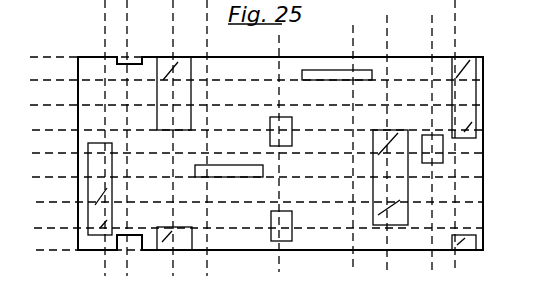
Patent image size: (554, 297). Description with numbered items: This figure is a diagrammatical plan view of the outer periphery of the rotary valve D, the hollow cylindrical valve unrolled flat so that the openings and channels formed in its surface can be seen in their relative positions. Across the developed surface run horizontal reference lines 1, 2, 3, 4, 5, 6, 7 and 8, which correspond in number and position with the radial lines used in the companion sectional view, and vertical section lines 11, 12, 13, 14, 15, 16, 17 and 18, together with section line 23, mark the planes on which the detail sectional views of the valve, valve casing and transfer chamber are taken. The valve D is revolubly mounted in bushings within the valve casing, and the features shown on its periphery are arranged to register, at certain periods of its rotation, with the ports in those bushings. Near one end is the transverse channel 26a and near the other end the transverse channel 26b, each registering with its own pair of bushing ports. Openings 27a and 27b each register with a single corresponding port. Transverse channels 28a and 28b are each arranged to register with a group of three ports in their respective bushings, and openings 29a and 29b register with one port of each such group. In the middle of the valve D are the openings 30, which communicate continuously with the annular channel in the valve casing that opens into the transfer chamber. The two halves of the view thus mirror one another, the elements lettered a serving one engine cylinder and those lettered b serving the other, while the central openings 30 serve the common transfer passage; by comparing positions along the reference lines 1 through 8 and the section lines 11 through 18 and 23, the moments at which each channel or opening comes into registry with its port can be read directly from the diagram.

The reference line 1 is at (249, 154).
The reference line 2 is at (250, 81).
The reference line 3 is at (250, 105).
The reference line 4 is at (251, 131).
The reference line 5 is at (252, 154).
The reference line 6 is at (252, 178).
The reference line 7 is at (254, 203).
The reference line 8 is at (253, 229).
The section line 11 is at (465, 290).
The section line 12 is at (437, 294).
The section line 13 is at (396, 290).
The section line 14 is at (360, 290).
The section line 15 is at (110, 294).
The section line 16 is at (137, 294).
The section line 17 is at (180, 292).
The section line 18 is at (215, 292).
The section line 23 is at (281, 163).
The valve D is at (85, 244).
The transverse channel 26a is at (478, 92).
The transverse channel 26b is at (100, 192).
The opening 27a is at (445, 158).
The opening 27b is at (133, 250).
The transverse channel 28a is at (392, 130).
The transverse channel 28b is at (191, 118).
The opening 29a is at (323, 72).
The opening 29b is at (232, 177).
The openings 30 is at (283, 211).